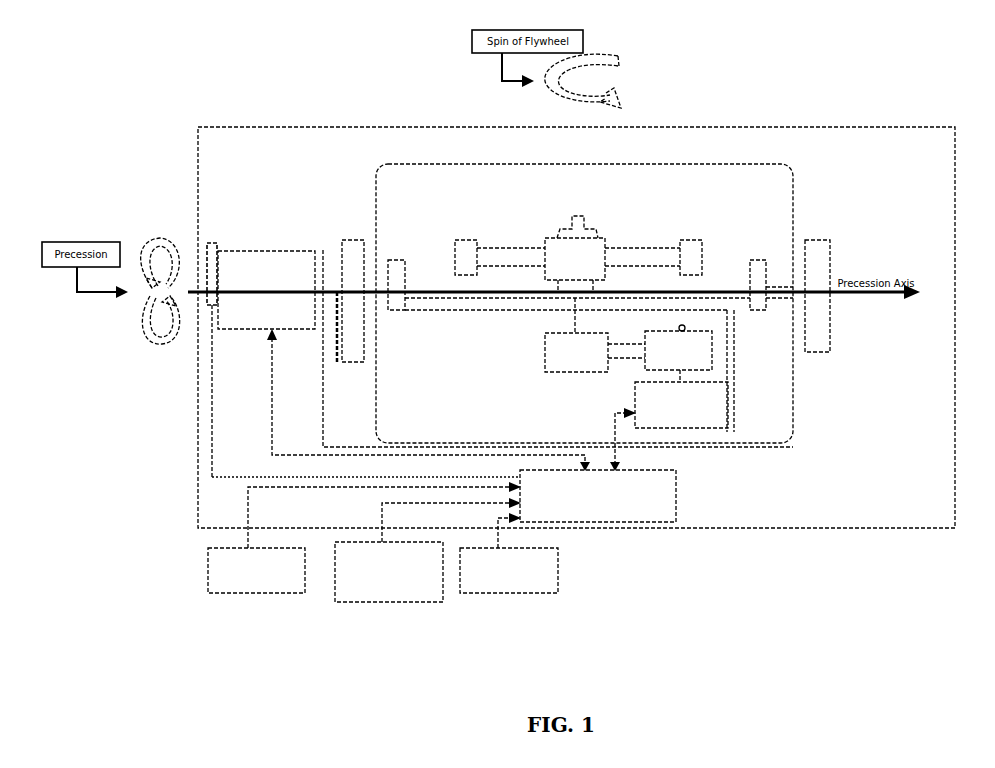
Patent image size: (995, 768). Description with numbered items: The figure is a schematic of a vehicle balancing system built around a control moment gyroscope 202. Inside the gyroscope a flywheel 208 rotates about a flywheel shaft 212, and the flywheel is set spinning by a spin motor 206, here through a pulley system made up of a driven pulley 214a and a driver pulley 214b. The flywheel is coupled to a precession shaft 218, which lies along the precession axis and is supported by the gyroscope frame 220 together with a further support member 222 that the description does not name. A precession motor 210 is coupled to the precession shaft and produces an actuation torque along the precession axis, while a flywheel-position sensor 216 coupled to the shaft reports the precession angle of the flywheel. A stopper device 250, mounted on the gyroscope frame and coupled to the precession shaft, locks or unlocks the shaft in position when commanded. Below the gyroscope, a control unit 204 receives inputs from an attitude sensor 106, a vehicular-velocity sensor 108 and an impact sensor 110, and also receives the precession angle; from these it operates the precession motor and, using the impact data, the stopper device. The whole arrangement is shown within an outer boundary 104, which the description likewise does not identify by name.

The gyroscopic stabilizer assembly 104 is at (923, 528).
The attitude sensor 106 is at (364, 537).
The vehicular-velocity sensor 108 is at (428, 550).
The impact sensor 110 is at (509, 553).
The control moment gyroscope 202 is at (797, 197).
The control unit 204 is at (598, 496).
The spin motor 206 is at (669, 420).
The flywheel 208 is at (448, 252).
The precession motor 210 is at (404, 361).
The flywheel shaft 212 is at (592, 220).
The driven pulley 214a is at (556, 376).
The driver pulley 214b is at (577, 372).
The flywheel-position sensor 216 is at (323, 250).
The precession shaft 218 is at (343, 356).
The gyroscope frame 220 is at (352, 240).
The bearing 222 is at (830, 248).
The stopper device 250 is at (361, 349).